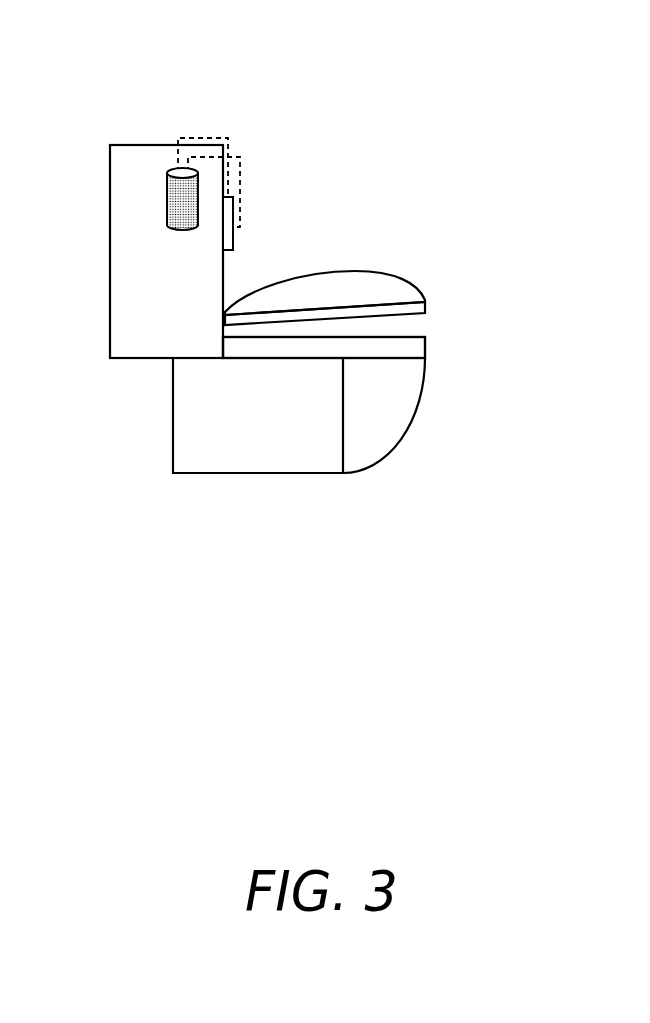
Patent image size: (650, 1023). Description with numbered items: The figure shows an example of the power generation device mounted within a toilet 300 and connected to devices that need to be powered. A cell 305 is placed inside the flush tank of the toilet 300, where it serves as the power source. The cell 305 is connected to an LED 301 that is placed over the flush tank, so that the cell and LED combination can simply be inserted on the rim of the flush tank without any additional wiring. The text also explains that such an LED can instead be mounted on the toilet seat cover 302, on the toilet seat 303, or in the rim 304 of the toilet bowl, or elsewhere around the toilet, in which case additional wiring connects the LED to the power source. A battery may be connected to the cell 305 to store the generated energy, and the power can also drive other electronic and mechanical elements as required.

The toilet 300 is at (130, 90).
The LED placed over the flush tank 301 is at (233, 245).
The toilet seat cover 302 is at (387, 272).
The toilet seat 303 is at (432, 303).
The rim of the toilet bowl 304 is at (426, 345).
The cell 305 is at (166, 198).